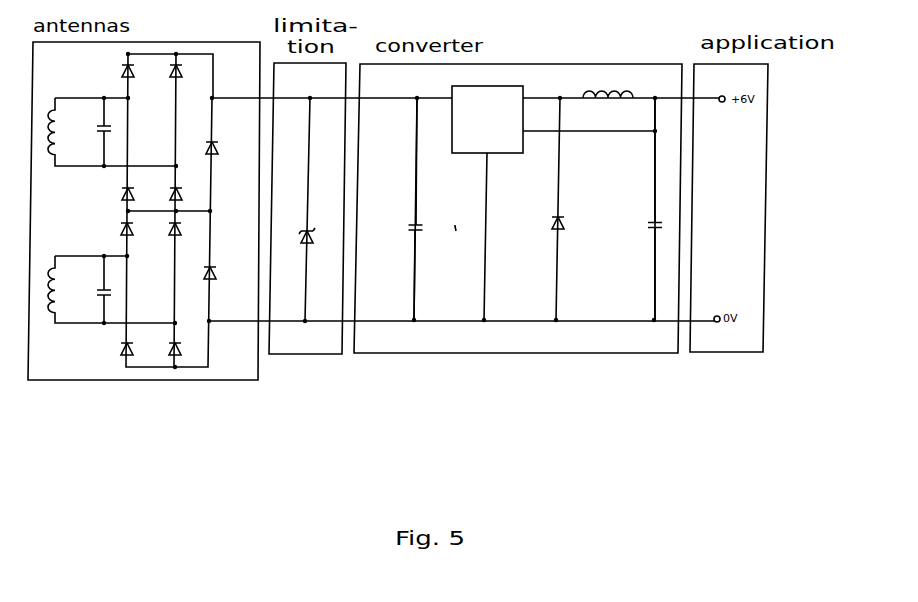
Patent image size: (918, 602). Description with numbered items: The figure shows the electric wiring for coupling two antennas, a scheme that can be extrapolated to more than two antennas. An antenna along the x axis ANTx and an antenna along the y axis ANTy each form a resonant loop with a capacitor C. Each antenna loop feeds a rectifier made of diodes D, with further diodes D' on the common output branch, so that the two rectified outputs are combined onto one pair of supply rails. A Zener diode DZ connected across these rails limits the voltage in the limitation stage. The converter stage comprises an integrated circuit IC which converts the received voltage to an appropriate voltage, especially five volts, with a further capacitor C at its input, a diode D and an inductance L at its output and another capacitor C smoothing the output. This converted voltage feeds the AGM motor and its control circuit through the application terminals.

The antenna along the x axis ANTx is at (112, 132).
The antenna along the y axis ANTy is at (111, 289).
The capacitor C is at (383, 210).
The diode D is at (351, 205).
The diode D' is at (222, 206).
The Zener diode DZ is at (313, 233).
The integrated circuit IC is at (487, 111).
The inductance L is at (608, 87).